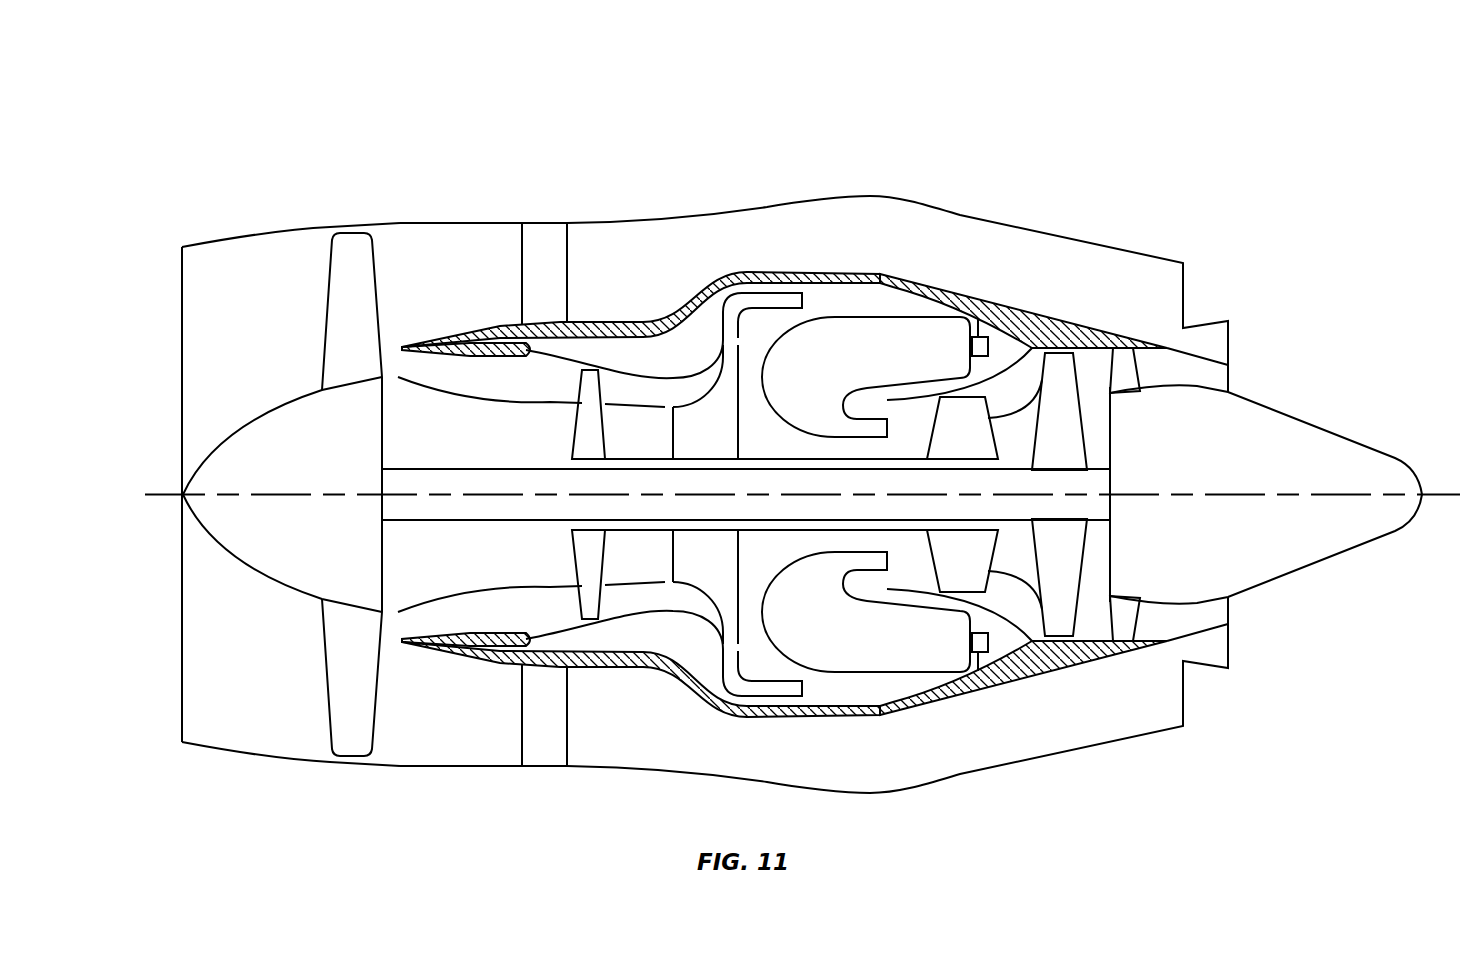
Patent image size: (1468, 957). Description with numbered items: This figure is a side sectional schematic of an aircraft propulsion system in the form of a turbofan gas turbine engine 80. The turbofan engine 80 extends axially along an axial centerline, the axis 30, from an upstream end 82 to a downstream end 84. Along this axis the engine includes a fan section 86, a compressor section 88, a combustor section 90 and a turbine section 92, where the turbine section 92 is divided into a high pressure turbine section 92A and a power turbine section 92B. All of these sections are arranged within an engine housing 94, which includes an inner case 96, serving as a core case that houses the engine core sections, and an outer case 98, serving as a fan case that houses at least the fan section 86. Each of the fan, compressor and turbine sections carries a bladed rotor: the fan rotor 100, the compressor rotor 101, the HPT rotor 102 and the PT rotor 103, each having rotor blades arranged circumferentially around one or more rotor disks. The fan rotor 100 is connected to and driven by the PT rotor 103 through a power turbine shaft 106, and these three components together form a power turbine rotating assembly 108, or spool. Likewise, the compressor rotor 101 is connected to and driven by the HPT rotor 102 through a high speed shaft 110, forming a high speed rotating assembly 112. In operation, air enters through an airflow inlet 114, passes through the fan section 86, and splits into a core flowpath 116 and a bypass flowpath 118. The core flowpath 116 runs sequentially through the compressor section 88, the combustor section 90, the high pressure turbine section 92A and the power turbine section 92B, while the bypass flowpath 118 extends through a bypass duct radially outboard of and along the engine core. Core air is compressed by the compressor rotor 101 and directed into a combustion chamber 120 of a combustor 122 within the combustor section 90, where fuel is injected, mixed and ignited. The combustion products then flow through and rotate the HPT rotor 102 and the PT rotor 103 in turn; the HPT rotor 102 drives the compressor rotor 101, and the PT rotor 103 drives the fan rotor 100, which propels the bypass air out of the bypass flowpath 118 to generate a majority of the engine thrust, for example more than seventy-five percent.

The axis 30 is at (152, 490).
The turbofan gas turbine engine 80 is at (158, 120).
The upstream end 82 is at (182, 245).
The downstream end 84 is at (1422, 494).
The fan section 86 is at (318, 215).
The compressor section 88 is at (652, 362).
The combustor section 90 is at (888, 306).
The turbine section 92 is at (1012, 365).
The high pressure turbine section 92A is at (997, 595).
The power turbine section 92B is at (1083, 624).
The engine housing 94 is at (772, 190).
The inner case 96 is at (745, 272).
The outer case 98 is at (410, 225).
The fan rotor 100 is at (282, 587).
The compressor rotor 101 is at (707, 592).
The HPT rotor 102 is at (935, 568).
The PT rotor 103 is at (1083, 572).
The power turbine shaft 106 is at (433, 520).
The power turbine rotating assembly 108 is at (228, 567).
The high speed shaft 110 is at (768, 530).
The high speed rotating assembly 112 is at (550, 438).
The airflow inlet 114 is at (182, 330).
The core flowpath 116 is at (485, 397).
The bypass flowpath 118 is at (432, 292).
The combustion chamber 120 is at (820, 375).
The combustor 122 is at (848, 315).